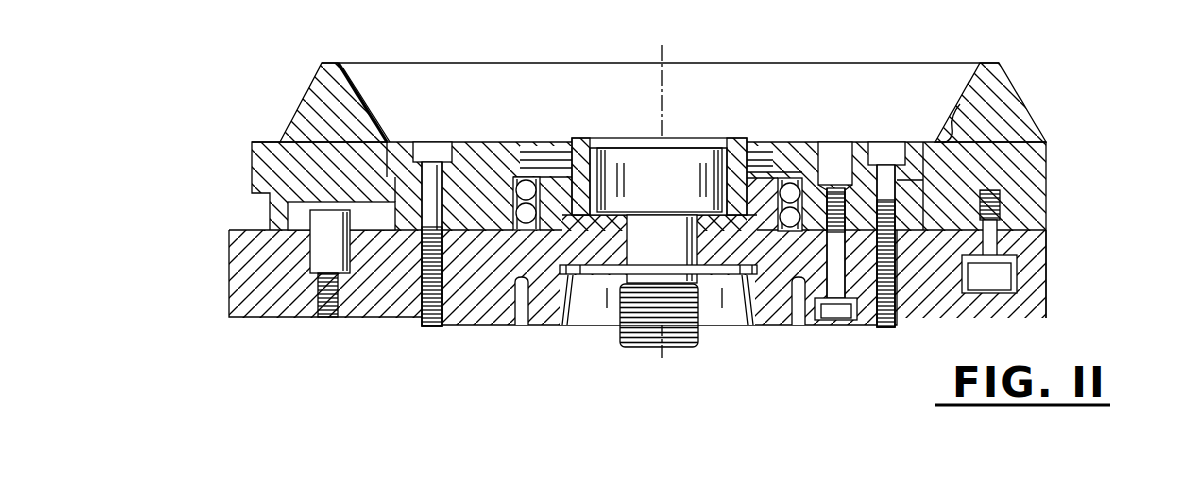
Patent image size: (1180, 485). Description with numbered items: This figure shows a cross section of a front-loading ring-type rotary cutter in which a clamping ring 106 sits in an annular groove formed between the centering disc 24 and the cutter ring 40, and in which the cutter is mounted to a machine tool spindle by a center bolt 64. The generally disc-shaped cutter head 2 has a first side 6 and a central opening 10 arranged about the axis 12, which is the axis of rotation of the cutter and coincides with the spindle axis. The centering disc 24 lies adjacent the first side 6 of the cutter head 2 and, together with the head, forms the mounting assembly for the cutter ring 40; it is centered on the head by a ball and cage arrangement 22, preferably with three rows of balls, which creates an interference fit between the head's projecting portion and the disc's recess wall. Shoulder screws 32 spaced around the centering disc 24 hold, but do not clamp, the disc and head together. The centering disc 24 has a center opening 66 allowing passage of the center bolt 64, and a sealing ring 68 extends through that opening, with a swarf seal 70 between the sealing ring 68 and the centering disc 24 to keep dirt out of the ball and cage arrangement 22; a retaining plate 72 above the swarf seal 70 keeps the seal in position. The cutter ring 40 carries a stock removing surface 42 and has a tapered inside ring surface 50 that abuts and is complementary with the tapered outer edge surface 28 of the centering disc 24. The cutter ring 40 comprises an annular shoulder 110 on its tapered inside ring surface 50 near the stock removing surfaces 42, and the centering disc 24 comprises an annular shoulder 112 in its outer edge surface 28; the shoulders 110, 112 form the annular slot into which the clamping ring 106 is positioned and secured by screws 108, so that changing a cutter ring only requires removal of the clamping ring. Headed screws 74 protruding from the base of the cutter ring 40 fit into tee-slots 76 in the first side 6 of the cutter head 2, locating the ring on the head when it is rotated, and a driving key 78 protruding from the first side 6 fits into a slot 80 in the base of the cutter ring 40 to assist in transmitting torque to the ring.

The cutter head 2 is at (378, 318).
The first side 6 is at (242, 258).
The central opening 10 is at (590, 308).
The axis 12 is at (662, 84).
The ball and cage arrangement 22 is at (780, 302).
The centering disc 24 is at (806, 143).
The outer edge surface 28 is at (908, 178).
The shoulder screws 32 is at (836, 306).
The cutter ring 40 is at (1058, 122).
The stock removing surface 42 is at (312, 76).
The tapered inside ring surface 50 is at (370, 136).
The center bolt 64 is at (674, 349).
The center opening 66 is at (585, 139).
The sealing ring 68 is at (745, 141).
The swarf seal 70 is at (758, 143).
The retaining plate 72 is at (535, 143).
The headed screws 74 is at (1018, 278).
The tee-slots 76 is at (1042, 243).
The driving key 78 is at (320, 262).
The slot 80 is at (290, 219).
The clamping ring 106 is at (402, 141).
The screws 108 is at (438, 148).
The annular shoulder 110 is at (960, 104).
The annular shoulder 112 is at (886, 144).